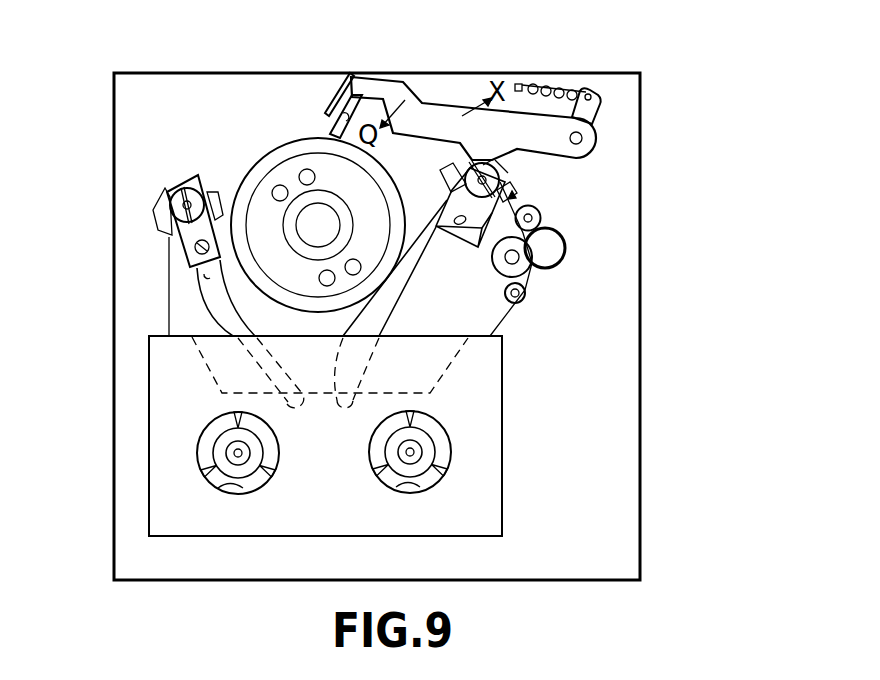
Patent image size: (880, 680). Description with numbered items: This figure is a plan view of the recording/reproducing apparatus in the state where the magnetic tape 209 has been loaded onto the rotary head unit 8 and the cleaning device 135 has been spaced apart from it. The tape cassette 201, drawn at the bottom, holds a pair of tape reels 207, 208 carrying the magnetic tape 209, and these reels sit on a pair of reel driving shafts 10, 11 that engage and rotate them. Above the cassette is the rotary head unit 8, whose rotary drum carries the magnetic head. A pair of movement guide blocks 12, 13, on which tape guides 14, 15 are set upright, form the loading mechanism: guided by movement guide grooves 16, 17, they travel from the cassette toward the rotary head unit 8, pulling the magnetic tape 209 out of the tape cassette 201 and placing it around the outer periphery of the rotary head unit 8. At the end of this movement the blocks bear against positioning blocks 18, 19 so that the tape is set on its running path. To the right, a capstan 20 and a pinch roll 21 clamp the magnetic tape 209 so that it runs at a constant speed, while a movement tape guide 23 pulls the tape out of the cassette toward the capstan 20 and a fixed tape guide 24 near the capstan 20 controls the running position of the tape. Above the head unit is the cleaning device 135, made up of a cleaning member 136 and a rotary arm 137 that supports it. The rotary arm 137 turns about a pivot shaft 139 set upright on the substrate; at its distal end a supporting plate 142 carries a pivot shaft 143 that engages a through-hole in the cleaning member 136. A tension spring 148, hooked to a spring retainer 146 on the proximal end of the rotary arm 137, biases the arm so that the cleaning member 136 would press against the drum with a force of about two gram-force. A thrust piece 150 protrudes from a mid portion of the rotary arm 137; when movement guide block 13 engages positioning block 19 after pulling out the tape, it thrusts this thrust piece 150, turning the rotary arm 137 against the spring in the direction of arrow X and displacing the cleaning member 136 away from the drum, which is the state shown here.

The rotary head unit 8 is at (244, 170).
The reel driving shaft 10 is at (250, 452).
The reel driving shaft 11 is at (398, 453).
The movement guide block 12 is at (182, 234).
The movement guide block 13 is at (450, 217).
The tape guide 14 is at (162, 192).
The tape guide 15 is at (500, 172).
The movement guide groove 16 is at (210, 280).
The movement guide groove 17 is at (402, 300).
The positioning block 18 is at (153, 210).
The positioning block 19 is at (513, 190).
The capstan 20 is at (565, 250).
The pinch roll 21 is at (533, 265).
The movement tape guide 23 is at (523, 297).
The fixed tape guide 24 is at (540, 222).
The cleaning device 135 is at (423, 74).
The cleaning member 136 is at (327, 128).
The rotary arm 137 is at (452, 116).
The pivot shaft 139 is at (593, 128).
The supporting plate 142 is at (332, 98).
The pivot shaft 143 is at (357, 100).
The spring retainer 146 is at (518, 82).
The tension spring 148 is at (560, 82).
The thrust piece 150 is at (500, 157).
The tape cassette 201 is at (497, 452).
The tape reel 207 is at (407, 487).
The tape reel 208 is at (243, 490).
The magnetic tape 209 is at (507, 317).